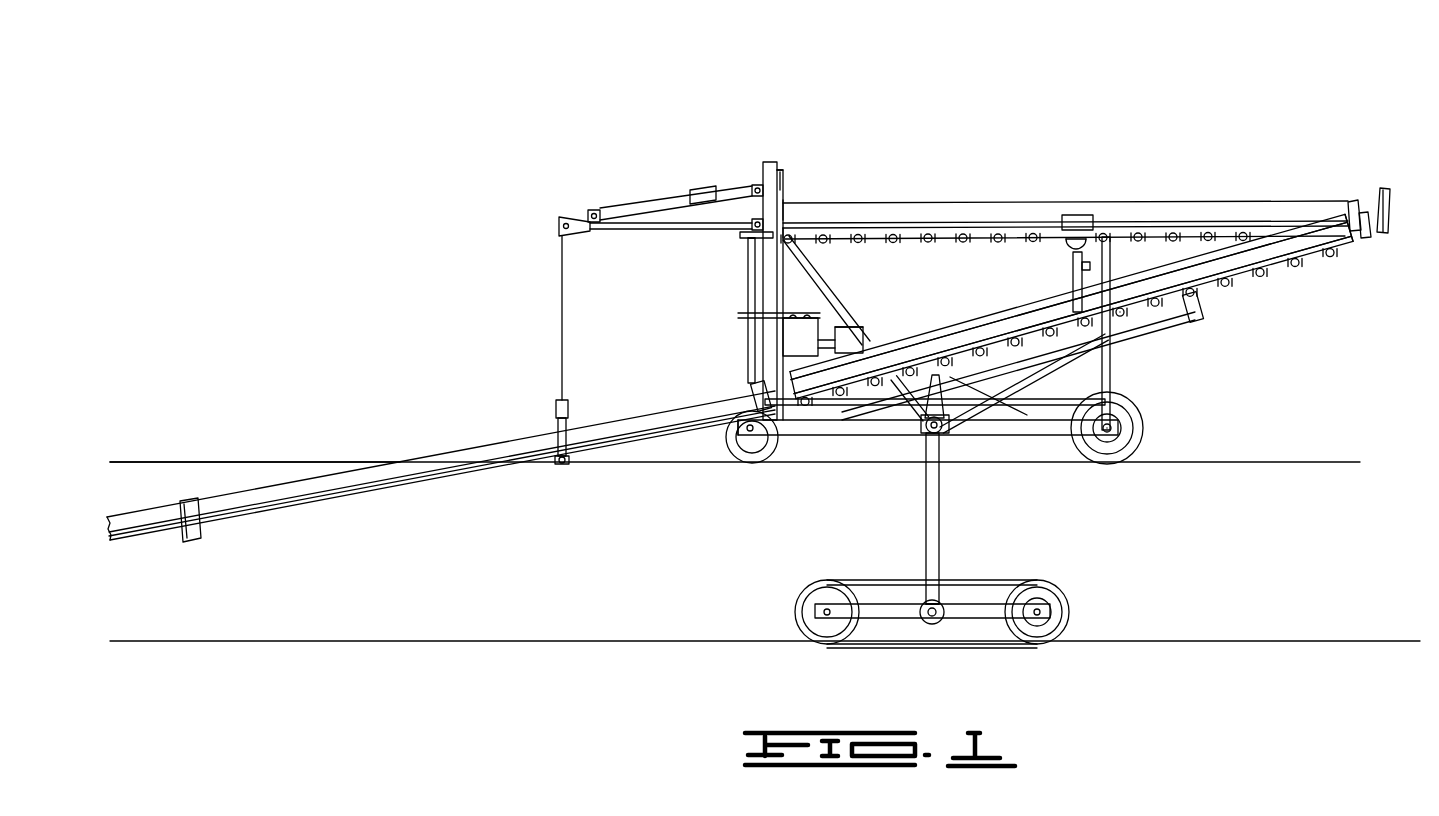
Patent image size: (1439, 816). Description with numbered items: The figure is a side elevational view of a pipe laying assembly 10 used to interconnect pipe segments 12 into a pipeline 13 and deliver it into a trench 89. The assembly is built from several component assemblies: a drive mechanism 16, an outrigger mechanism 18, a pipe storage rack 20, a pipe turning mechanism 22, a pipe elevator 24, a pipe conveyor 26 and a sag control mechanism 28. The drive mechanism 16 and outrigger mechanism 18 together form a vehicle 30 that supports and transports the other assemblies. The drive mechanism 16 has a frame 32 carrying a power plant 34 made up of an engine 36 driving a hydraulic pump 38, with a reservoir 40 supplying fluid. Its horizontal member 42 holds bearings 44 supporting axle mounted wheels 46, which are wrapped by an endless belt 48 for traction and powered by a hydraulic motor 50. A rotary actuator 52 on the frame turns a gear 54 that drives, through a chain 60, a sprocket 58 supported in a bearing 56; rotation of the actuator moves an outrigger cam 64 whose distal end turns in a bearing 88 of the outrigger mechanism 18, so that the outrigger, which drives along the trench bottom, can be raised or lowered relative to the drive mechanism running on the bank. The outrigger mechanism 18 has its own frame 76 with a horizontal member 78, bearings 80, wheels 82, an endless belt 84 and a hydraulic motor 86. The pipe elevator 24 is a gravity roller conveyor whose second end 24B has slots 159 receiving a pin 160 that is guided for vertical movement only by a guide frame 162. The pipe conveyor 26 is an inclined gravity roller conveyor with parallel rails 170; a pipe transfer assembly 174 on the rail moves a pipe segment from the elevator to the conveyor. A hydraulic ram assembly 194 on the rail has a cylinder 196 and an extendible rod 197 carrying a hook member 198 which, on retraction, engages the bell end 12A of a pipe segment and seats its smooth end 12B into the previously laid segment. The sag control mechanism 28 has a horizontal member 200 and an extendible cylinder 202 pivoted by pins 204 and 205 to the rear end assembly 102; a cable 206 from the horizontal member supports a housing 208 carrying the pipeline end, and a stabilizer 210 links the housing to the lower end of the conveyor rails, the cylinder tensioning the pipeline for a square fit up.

The pipe laying assembly 10 is at (730, 104).
The pipe segment 12 is at (310, 499).
The bell end 12A is at (755, 391).
The smooth end 12B is at (785, 216).
The pipeline 13 is at (160, 508).
The drive mechanism 16 is at (1180, 354).
The outrigger mechanism 18 is at (1010, 558).
The pipe storage rack 20 is at (1367, 193).
The pipe turning mechanism 22 is at (1063, 266).
The pipe elevator 24 is at (894, 227).
The second end of pipe elevator 24B is at (750, 243).
The pipe conveyor 26 is at (1331, 258).
The sag control mechanism 28 is at (582, 208).
The vehicle 30 is at (1148, 448).
The frame 32 is at (748, 295).
The power plant 34 is at (796, 293).
The engine 36 is at (790, 335).
The hydraulic pump 38 is at (856, 339).
The reservoir 40 is at (857, 327).
The horizontal member 42 is at (975, 429).
The bearings 44 is at (1108, 433).
The wheels 46 is at (1086, 459).
The endless belt 48 is at (825, 465).
The hydraulic motor 50 is at (1119, 418).
The rotary actuator 52 is at (949, 371).
The gear 54 is at (986, 411).
The bearing 56 is at (924, 434).
The sprocket 58 is at (861, 441).
The chain 60 is at (907, 407).
The outrigger cam 64 is at (934, 557).
The frame 76 is at (939, 621).
The horizontal member 78 is at (879, 615).
The bearings 80 is at (828, 617).
The wheels 82 is at (796, 608).
The endless belt 84 is at (936, 648).
The hydraulic motor 86 is at (1050, 624).
The bearing 88 is at (931, 605).
The trench 89 is at (255, 484).
The rear end assembly 102 is at (771, 165).
The slots 159 is at (749, 236).
The pin 160 is at (785, 233).
The guide frame 162 is at (786, 192).
The rails 170 is at (1263, 273).
The pipe transfer assembly 174 is at (1209, 323).
The hydraulic ram assembly 194 is at (980, 341).
The cylinder 196 is at (1029, 334).
The extendible rod 197 is at (1122, 306).
The hook member 198 is at (1391, 218).
The horizontal member 200 is at (585, 230).
The extendible cylinder 202 is at (717, 195).
The pin 204 is at (746, 225).
The pin 205 is at (755, 183).
The cable 206 is at (561, 286).
The housing 208 is at (555, 406).
The stabilizer 210 is at (599, 473).